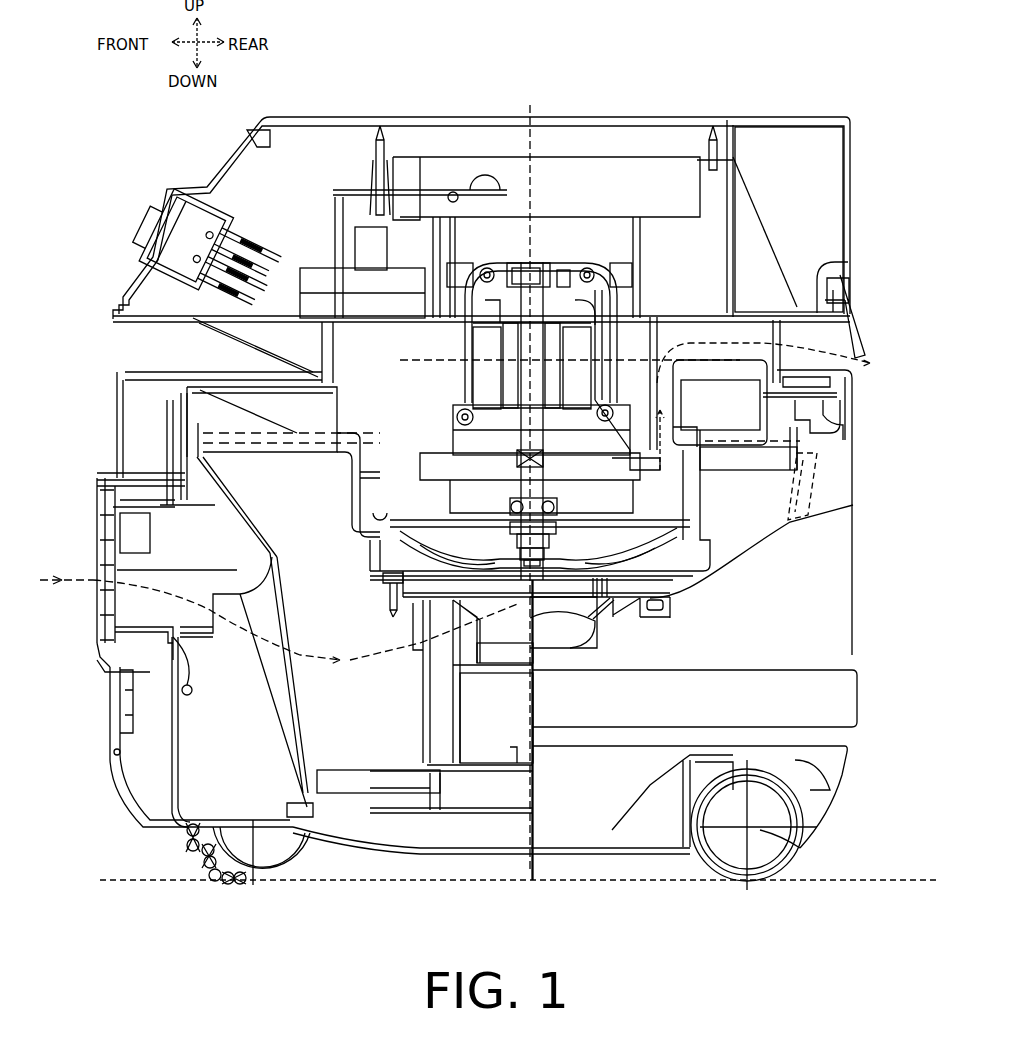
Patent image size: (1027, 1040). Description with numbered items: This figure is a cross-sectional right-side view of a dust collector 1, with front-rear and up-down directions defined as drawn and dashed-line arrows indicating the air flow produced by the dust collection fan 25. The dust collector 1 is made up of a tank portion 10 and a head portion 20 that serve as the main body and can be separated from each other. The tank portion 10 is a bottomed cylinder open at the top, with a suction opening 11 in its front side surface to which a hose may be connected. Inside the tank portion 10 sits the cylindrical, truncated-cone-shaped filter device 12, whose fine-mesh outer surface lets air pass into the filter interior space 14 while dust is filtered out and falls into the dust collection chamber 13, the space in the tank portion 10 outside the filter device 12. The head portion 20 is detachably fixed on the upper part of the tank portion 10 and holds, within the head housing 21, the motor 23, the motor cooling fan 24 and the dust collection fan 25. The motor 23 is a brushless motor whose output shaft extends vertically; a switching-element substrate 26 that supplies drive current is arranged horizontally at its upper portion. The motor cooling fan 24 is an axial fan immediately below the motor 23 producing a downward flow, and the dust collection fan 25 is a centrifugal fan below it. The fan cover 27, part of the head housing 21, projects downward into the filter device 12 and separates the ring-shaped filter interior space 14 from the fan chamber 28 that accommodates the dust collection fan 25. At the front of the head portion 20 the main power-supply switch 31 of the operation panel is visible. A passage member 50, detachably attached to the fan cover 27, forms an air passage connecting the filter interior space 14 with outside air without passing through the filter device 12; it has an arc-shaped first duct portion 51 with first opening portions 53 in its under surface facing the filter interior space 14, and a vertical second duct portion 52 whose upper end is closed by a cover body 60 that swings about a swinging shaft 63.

The dust collector 1 is at (851, 803).
The tank portion 10 is at (864, 667).
The suction opening 11 is at (108, 603).
The filter device 12 is at (293, 710).
The dust collection chamber 13 is at (265, 777).
The filter interior space 14 is at (392, 735).
The head portion 20 is at (222, 141).
The head housing 21 is at (347, 123).
The motor 23 is at (617, 405).
The motor cooling fan 24 is at (738, 347).
The dust collection fan 25 is at (600, 528).
The switching-element substrate 26 is at (490, 312).
The fan cover 27 is at (550, 560).
The fan chamber 28 is at (425, 572).
The main power-supply switch 31 is at (167, 185).
The passage member 50 is at (748, 340).
The first duct portion 51 is at (765, 395).
The second duct portion 52 is at (335, 220).
The first opening portions 53 is at (780, 440).
The cover body 60 is at (408, 190).
The swinging shaft 63 is at (467, 183).